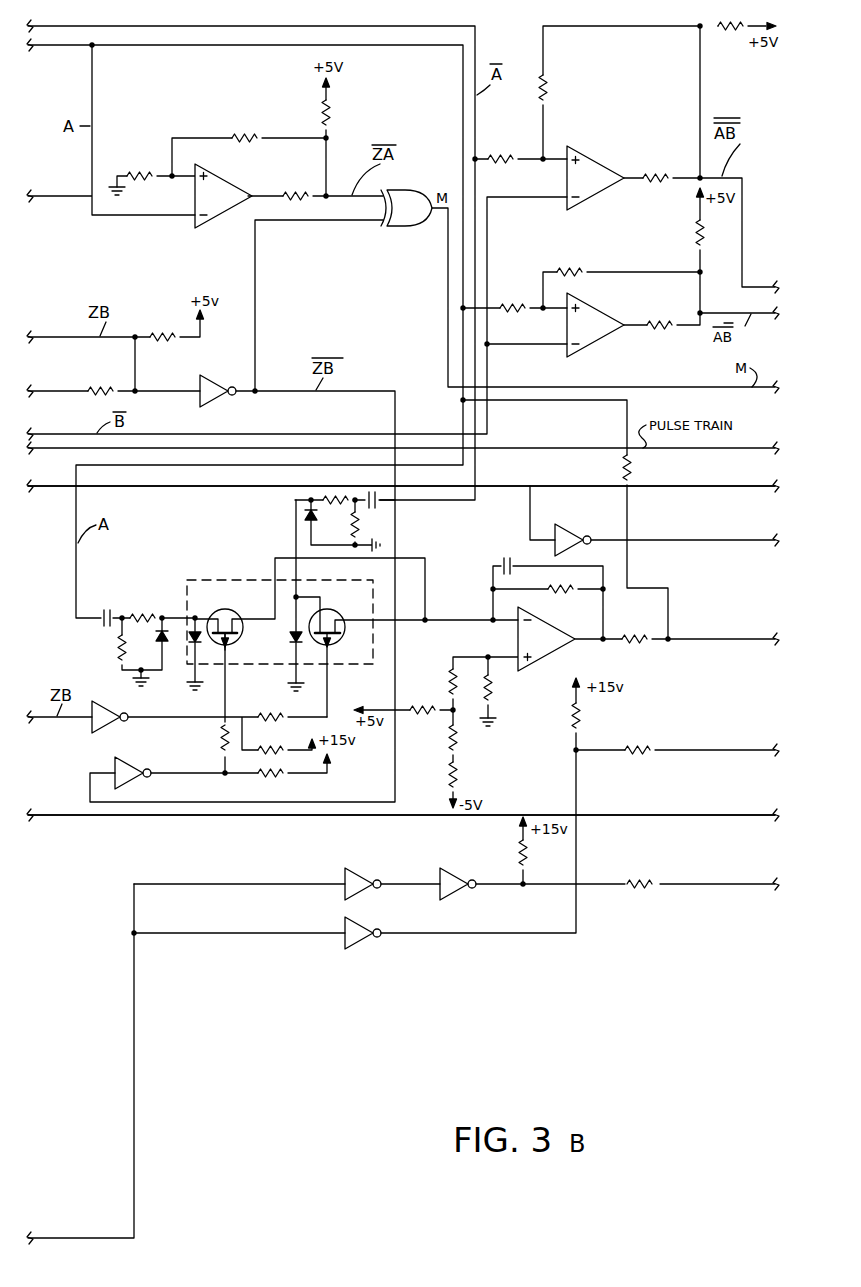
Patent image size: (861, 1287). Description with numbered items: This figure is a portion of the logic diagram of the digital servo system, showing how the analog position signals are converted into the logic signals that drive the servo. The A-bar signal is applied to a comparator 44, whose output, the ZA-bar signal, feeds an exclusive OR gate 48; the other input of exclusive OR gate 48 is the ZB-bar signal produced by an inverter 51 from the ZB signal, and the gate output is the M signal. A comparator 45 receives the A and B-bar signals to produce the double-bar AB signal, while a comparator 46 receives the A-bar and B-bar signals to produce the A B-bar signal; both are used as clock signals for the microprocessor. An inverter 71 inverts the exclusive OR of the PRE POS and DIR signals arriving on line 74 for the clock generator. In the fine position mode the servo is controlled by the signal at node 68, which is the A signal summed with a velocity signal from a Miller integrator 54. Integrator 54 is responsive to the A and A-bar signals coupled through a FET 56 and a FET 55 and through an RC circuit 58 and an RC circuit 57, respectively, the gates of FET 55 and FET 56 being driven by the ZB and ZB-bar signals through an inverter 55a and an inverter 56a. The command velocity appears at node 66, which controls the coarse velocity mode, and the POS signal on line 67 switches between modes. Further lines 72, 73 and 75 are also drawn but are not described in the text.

The comparator 44 is at (220, 229).
The exclusive OR gate 48 is at (410, 228).
The comparator 45 is at (578, 146).
The comparator 46 is at (600, 341).
The inverter 51 is at (210, 401).
The RC circuit 57 is at (389, 530).
The RC circuit 58 is at (134, 608).
The FET 56 is at (217, 607).
The FET 55 is at (340, 642).
The Miller integrator 54 is at (587, 669).
The inverter 71 is at (573, 530).
The line 74 is at (716, 489).
The output line 75 is at (720, 546).
The node 68 is at (698, 638).
The output line 73 is at (705, 748).
The node 66 is at (632, 815).
The output line 72 is at (683, 884).
The line 67 is at (134, 1051).
The inverter 55a is at (104, 725).
The inverter 56a is at (138, 777).